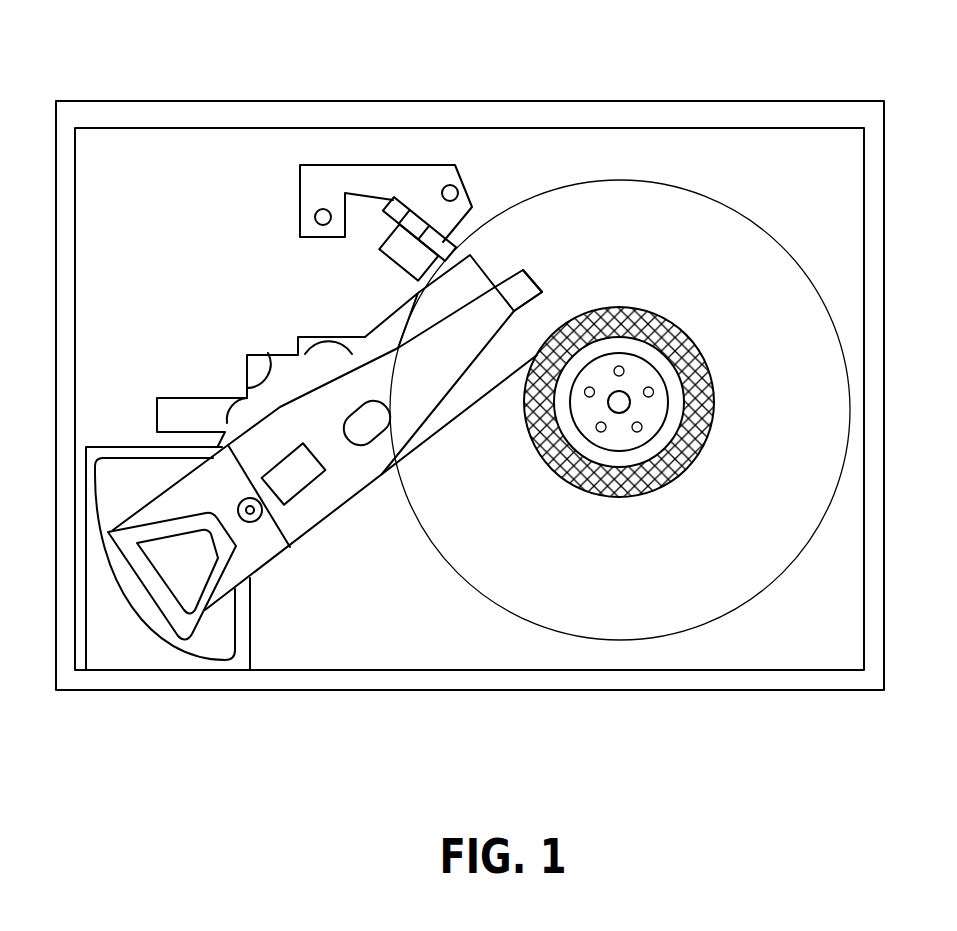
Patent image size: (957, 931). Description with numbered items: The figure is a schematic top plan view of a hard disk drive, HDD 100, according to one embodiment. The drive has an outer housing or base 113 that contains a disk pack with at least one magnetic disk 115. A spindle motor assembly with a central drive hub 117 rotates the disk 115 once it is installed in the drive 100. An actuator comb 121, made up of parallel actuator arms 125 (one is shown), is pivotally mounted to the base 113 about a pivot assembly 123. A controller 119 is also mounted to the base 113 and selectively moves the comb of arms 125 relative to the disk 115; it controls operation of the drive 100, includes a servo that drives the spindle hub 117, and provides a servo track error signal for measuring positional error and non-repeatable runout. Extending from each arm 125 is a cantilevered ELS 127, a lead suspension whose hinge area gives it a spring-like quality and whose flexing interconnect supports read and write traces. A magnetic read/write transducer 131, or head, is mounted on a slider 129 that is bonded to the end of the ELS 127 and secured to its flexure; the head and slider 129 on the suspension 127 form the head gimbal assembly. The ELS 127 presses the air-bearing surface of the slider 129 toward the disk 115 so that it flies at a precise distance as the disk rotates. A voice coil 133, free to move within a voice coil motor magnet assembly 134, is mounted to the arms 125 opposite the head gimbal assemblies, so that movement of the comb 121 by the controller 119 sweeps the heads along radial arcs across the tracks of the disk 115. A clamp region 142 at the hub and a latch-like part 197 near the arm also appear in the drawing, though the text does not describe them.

The hard disk drive 100 is at (441, 46).
The base 113 is at (872, 162).
The magnetic disk 115 is at (740, 210).
The drive hub 117 is at (652, 410).
The controller 119 is at (157, 650).
The actuator comb 121 is at (298, 355).
The pivot assembly 123 is at (258, 523).
The actuator arm 125 is at (355, 501).
The ELS (electrical lead suspension) 127 is at (430, 362).
The slider 129 is at (526, 272).
The magnetic read/write transducer 131 is at (544, 293).
The voice coil 133 is at (147, 530).
The voice coil motor magnet assembly 134 is at (142, 600).
The disk clamp 142 is at (628, 307).
The latch 197 is at (404, 274).